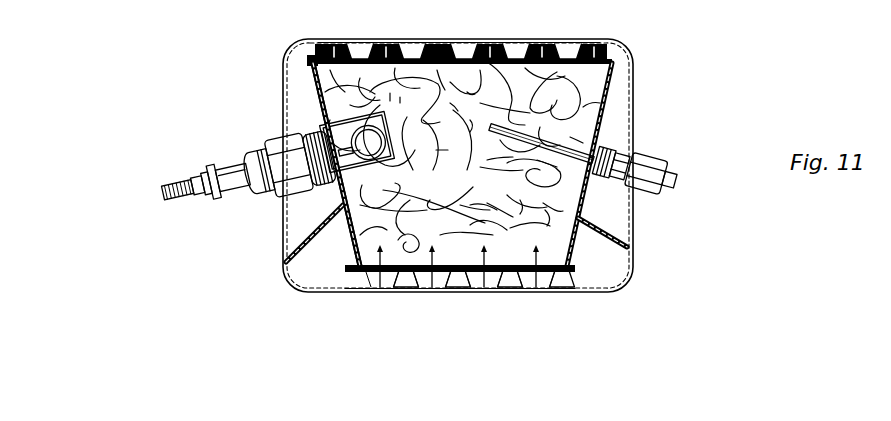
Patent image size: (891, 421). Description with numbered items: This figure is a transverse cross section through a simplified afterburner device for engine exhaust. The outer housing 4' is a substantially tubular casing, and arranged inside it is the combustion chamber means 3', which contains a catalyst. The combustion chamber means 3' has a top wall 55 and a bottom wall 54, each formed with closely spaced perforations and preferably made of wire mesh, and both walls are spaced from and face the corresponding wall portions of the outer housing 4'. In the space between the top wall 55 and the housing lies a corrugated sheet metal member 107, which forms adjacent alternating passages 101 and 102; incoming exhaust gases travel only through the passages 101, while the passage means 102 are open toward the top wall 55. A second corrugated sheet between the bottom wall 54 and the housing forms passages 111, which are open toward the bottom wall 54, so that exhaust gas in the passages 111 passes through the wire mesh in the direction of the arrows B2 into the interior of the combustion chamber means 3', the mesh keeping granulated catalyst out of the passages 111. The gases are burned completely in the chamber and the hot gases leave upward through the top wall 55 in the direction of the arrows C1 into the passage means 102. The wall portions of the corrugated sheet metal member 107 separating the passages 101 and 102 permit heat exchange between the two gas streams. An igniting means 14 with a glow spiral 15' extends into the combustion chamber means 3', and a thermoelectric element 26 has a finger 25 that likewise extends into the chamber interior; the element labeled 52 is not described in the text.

The combustion chamber means 3' is at (479, 165).
The outer housing 4' is at (443, 31).
The igniting means 14 is at (283, 173).
The glow spiral 15' is at (317, 137).
The finger 25 is at (575, 150).
The thermoelectric element 26 is at (653, 162).
The upper grid rail 52 is at (327, 53).
The bottom wall 54 is at (355, 275).
The top wall 55 is at (308, 65).
The passages 101 is at (412, 43).
The passage means 102 is at (380, 41).
The corrugated sheet metal member 107 is at (459, 43).
The passages 111 is at (413, 282).
The arrows B₂ B2 is at (537, 253).
The arrows C₁ C1 is at (283, 78).